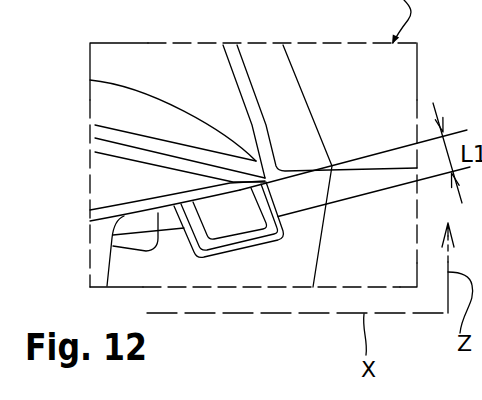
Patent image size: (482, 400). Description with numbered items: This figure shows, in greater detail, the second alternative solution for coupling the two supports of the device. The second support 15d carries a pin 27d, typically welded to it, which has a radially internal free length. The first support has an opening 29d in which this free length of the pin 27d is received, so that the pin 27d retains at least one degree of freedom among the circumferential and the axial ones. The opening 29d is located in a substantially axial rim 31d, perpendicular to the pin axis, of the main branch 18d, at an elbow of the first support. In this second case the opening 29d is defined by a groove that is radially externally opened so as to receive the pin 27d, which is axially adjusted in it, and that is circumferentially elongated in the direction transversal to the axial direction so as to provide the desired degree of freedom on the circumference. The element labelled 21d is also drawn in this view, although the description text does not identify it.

The second support 15d is at (89, 99).
The rail 21d is at (128, 185).
The rim 31d is at (112, 245).
The pin 27d is at (233, 217).
The opening 29d is at (241, 233).
The main branch 18d is at (260, 228).